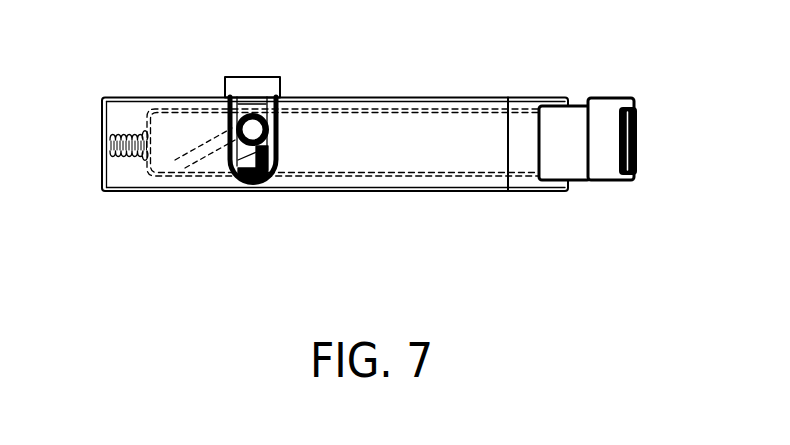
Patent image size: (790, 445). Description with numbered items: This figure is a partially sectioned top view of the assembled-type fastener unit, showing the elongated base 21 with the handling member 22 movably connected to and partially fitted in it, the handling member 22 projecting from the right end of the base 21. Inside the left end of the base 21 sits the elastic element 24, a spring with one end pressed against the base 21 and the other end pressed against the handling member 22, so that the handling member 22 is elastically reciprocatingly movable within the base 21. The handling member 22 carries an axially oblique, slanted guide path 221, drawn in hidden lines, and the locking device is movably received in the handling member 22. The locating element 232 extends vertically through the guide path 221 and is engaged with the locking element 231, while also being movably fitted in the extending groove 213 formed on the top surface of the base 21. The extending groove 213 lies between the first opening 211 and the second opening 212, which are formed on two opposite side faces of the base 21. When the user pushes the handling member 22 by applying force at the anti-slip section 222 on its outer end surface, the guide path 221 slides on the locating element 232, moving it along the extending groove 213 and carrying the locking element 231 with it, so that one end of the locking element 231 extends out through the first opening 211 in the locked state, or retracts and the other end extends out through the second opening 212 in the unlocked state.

The base 21 is at (423, 190).
The handling member 22 is at (610, 70).
The elastic element 24 is at (127, 125).
The first opening 211 is at (278, 188).
The second opening 212 is at (280, 93).
The extending groove 213 is at (233, 160).
The guide path 221 is at (173, 133).
The anti-slip section 222 is at (607, 168).
The locking element 231 is at (230, 77).
The locating element 232 is at (253, 130).